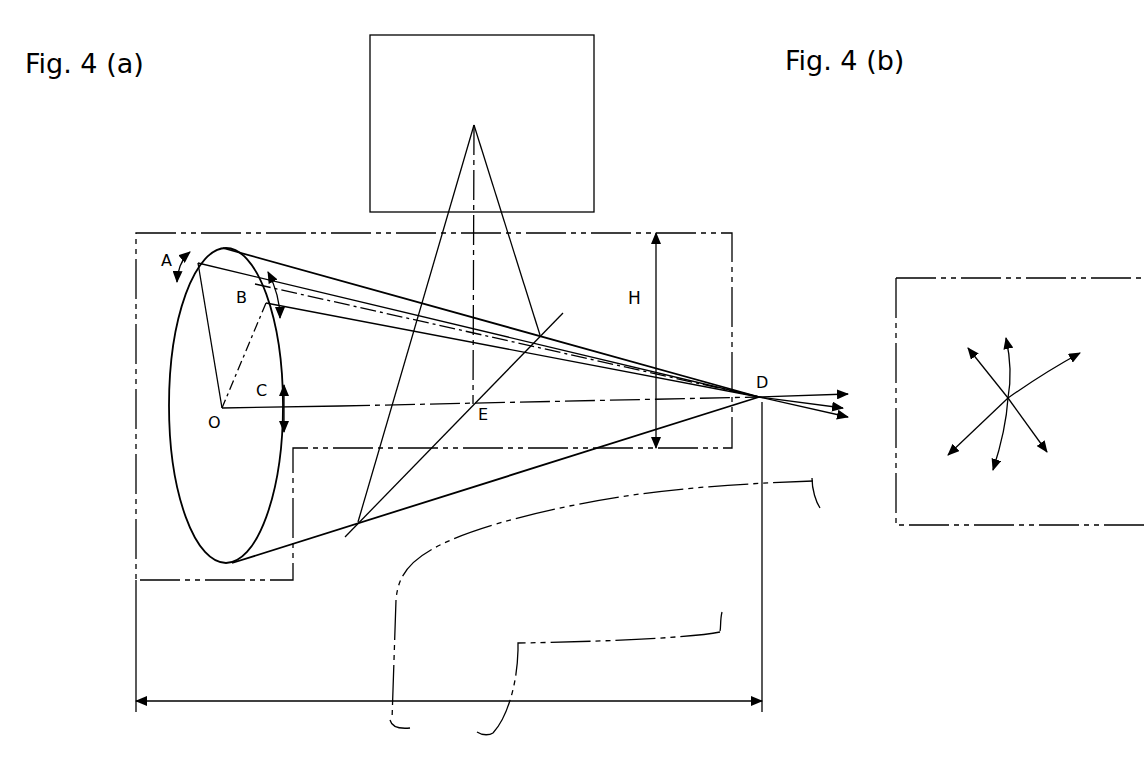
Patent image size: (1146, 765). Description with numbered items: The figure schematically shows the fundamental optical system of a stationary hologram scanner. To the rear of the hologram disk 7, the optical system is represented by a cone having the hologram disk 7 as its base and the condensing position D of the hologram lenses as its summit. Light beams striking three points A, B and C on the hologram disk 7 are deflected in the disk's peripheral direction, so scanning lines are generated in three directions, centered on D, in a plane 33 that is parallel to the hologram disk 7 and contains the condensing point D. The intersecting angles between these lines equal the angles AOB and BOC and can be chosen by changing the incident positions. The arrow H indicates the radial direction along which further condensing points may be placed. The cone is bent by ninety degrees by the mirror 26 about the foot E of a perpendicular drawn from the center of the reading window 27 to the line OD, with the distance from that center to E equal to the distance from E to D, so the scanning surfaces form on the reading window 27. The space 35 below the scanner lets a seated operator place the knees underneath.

The hologram disk 7 is at (205, 517).
The mirror 26 is at (383, 503).
The reading window 27 is at (577, 163).
The plane 33 is at (1040, 278).
The space below the scanner 35 is at (632, 627).